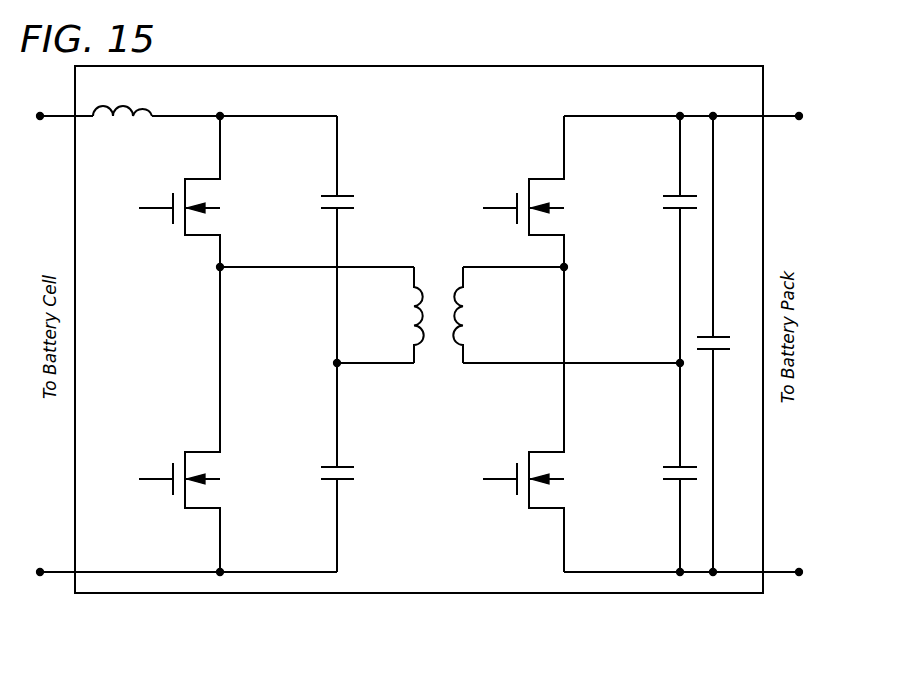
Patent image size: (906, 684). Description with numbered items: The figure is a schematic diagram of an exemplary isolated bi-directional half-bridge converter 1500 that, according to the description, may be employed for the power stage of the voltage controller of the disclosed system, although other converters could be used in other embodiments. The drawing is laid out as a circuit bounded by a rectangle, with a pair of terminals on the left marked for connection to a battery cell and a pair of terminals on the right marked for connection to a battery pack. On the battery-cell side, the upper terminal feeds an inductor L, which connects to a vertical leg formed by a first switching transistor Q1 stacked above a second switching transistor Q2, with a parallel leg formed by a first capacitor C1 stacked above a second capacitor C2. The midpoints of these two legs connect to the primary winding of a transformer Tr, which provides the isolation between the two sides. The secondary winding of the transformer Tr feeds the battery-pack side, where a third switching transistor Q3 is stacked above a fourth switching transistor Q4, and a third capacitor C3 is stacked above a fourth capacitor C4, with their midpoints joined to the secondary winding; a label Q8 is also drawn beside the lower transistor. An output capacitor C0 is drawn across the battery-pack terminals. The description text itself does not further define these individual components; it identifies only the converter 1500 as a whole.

The isolated bi-directional half-bridge converter 1500 is at (565, 607).
The inductor L is at (122, 127).
The first switching transistor Q1 is at (176, 191).
The second switching transistor Q2 is at (175, 419).
The third switching transistor Q3 is at (520, 191).
The fourth switching transistor Q4 is at (518, 419).
The switching transistor Q8 is at (603, 459).
The first capacitor C1 is at (328, 239).
The second capacitor C2 is at (328, 467).
The third capacitor C3 is at (671, 239).
The fourth capacitor C4 is at (671, 467).
The output capacitor C0 is at (722, 344).
The transformer Tr is at (438, 303).